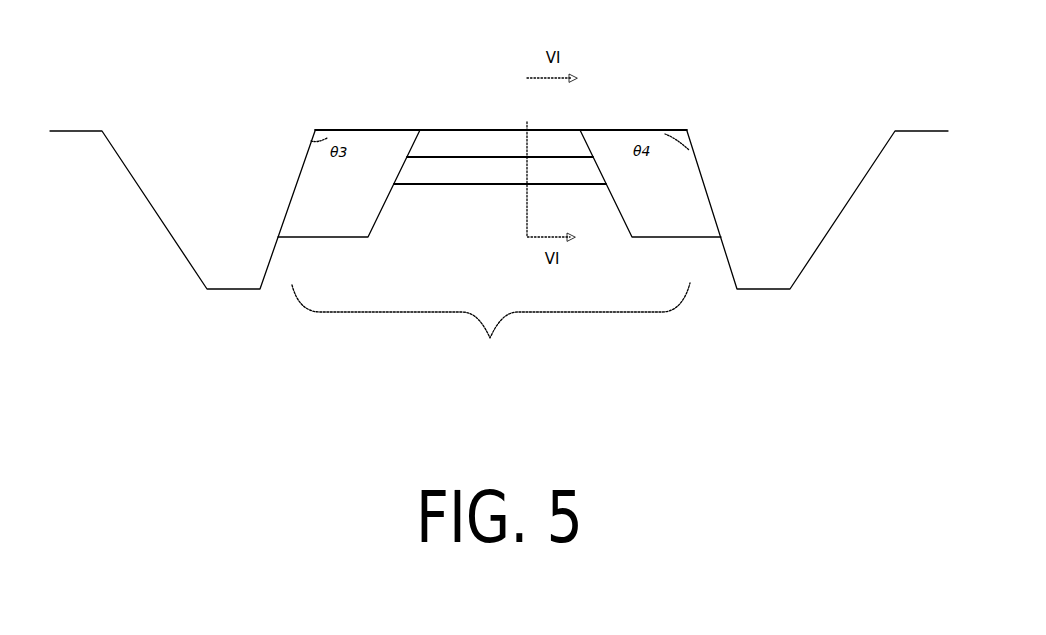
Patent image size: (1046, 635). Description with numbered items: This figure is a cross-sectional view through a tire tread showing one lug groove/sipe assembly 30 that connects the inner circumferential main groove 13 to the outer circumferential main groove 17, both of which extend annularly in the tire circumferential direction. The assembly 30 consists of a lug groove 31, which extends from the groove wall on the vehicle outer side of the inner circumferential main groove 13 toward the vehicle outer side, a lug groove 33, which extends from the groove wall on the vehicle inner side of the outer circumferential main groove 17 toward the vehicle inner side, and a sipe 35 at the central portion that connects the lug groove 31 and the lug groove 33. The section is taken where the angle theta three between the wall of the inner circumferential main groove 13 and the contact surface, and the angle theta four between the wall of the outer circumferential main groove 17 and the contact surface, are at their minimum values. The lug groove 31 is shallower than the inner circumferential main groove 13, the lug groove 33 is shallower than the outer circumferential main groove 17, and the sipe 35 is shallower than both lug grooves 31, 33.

The inner circumferential main groove 13 is at (206, 128).
The outer circumferential main groove 17 is at (824, 124).
The lug groove/sipe assembly 30 is at (491, 258).
The lug groove 31 is at (303, 222).
The lug groove 33 is at (680, 223).
The sipe 35 is at (507, 177).